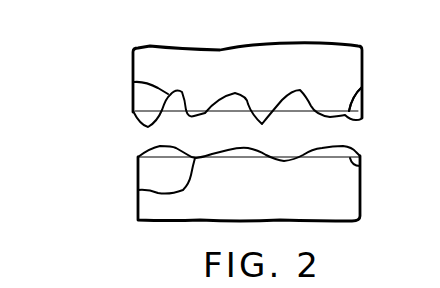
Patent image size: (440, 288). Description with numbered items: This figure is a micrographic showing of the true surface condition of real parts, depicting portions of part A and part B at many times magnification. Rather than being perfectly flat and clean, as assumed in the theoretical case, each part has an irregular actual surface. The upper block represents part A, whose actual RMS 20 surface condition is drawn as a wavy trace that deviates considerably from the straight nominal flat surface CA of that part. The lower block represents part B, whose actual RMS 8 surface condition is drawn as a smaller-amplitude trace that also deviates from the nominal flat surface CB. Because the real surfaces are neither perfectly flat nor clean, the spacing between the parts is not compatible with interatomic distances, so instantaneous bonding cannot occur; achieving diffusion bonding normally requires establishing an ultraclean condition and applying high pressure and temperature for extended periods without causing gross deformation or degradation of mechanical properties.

The part A is at (362, 46).
The part B is at (360, 197).
The nominal flat surface CA is at (362, 88).
The nominal flat surface CB is at (362, 166).
The RMS surface condition 20 is at (134, 82).
The RMS surface condition 8 is at (138, 190).